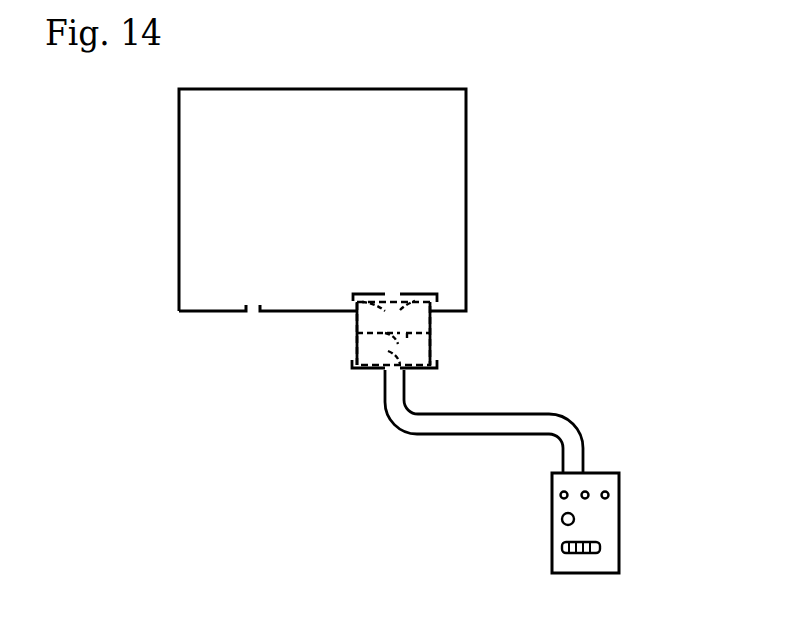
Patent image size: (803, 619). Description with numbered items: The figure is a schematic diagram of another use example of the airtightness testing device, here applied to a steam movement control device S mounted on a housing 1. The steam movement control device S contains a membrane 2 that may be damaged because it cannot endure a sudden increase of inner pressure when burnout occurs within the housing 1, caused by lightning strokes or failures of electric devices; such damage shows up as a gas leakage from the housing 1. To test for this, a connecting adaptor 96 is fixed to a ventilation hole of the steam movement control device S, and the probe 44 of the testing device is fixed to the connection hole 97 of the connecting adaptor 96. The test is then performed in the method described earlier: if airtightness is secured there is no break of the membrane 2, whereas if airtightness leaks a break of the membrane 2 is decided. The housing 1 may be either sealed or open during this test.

The housing 1 is at (460, 184).
The membrane 2 is at (402, 302).
The steam movement control device S is at (357, 341).
The connecting adaptor 96 is at (371, 292).
The connection hole 97 is at (391, 290).
The probe 44 is at (528, 423).